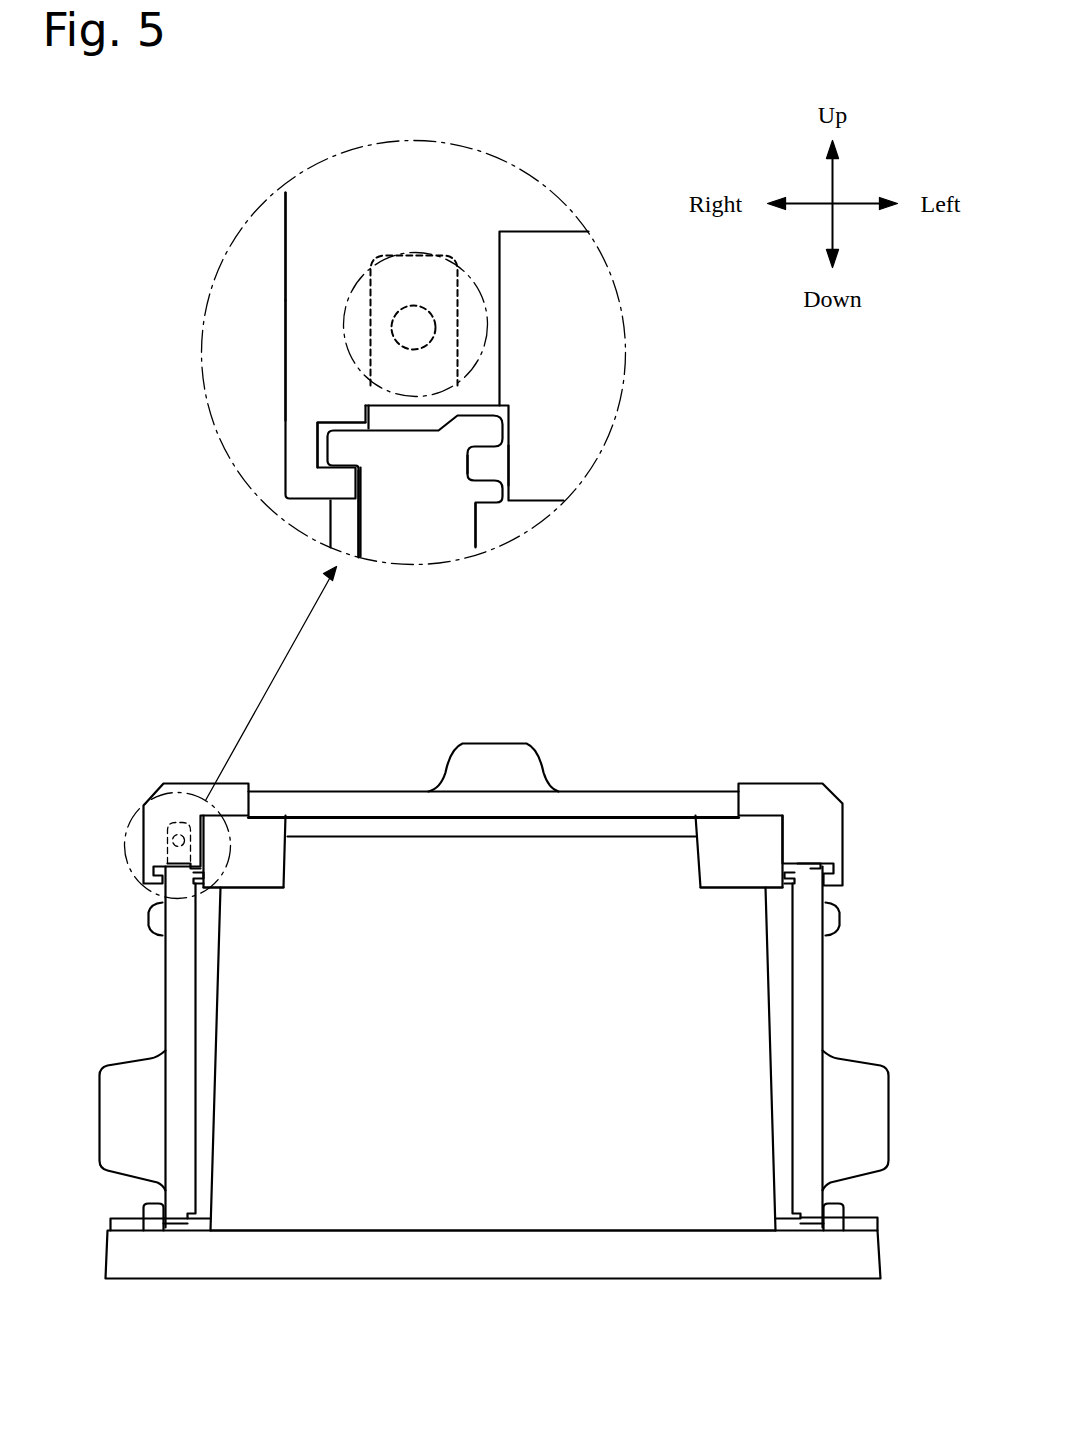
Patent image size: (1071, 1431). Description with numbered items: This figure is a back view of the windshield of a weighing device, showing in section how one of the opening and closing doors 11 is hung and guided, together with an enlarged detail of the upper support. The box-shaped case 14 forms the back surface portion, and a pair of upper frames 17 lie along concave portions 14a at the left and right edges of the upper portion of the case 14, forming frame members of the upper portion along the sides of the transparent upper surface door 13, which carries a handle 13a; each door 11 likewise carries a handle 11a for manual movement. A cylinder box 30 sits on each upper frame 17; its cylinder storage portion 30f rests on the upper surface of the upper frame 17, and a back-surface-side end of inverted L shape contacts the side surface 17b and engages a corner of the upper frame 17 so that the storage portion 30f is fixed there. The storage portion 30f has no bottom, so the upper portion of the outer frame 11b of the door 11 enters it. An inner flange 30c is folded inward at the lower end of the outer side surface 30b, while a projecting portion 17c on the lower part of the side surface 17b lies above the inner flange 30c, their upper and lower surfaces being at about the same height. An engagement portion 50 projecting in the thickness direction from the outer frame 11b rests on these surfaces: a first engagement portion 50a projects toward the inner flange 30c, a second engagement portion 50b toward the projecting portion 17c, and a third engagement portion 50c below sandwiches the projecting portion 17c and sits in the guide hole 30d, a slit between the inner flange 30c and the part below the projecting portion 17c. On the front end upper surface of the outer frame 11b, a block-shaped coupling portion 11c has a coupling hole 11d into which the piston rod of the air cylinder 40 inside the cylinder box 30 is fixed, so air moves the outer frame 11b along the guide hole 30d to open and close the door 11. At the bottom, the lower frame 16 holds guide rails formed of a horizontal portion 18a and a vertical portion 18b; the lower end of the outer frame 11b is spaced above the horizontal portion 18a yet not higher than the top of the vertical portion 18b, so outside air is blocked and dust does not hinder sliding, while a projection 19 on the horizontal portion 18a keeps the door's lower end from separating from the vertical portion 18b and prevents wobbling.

The opening and closing door 11 is at (155, 1019).
The handle 11a is at (122, 1133).
The outer frame 11b is at (378, 537).
The coupling portion 11c is at (370, 326).
The coupling hole 11d is at (406, 327).
The upper surface door 13 is at (618, 806).
The handle 13a is at (470, 760).
The case 14 is at (468, 1195).
The concave portion 14a is at (255, 887).
The lower frame 16 is at (388, 1240).
The upper frame 17 is at (577, 278).
The side surface 17b is at (496, 312).
The projecting portion 17c is at (493, 458).
The horizontal portion 18a is at (113, 1228).
The vertical portion 18b is at (180, 1222).
The projection 19 is at (140, 1212).
The cylinder box 30 is at (194, 770).
The outer side surface 30b is at (283, 363).
The inner flange 30c is at (338, 473).
The guide hole 30d is at (355, 485).
The cylinder storage portion 30f is at (310, 233).
The air cylinder 40 is at (458, 162).
The engagement portion 50 is at (512, 512).
The first engagement portion 50a is at (350, 452).
The second engagement portion 50b is at (468, 438).
The third engagement portion 50c is at (485, 493).